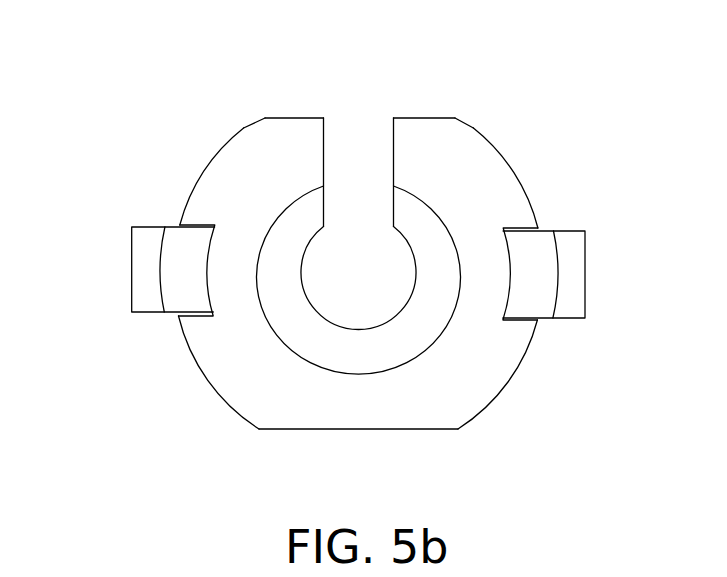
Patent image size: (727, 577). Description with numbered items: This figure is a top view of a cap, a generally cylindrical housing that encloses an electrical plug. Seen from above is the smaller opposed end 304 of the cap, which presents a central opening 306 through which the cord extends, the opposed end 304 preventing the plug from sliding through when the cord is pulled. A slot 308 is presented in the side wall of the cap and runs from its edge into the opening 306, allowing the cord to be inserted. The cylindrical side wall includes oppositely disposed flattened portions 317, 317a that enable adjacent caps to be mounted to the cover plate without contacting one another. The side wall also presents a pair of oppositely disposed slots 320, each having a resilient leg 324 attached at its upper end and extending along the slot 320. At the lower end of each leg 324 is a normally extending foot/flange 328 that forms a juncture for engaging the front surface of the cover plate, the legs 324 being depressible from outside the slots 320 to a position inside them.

The opposed end 304 is at (299, 329).
The opening 306 is at (356, 311).
The slot 308 is at (363, 165).
The flattened portion 317 is at (282, 117).
The flattened portion 317a is at (373, 429).
The slot 320 is at (180, 225).
The resilient leg 324 is at (173, 280).
The foot/flange 328 is at (143, 258).